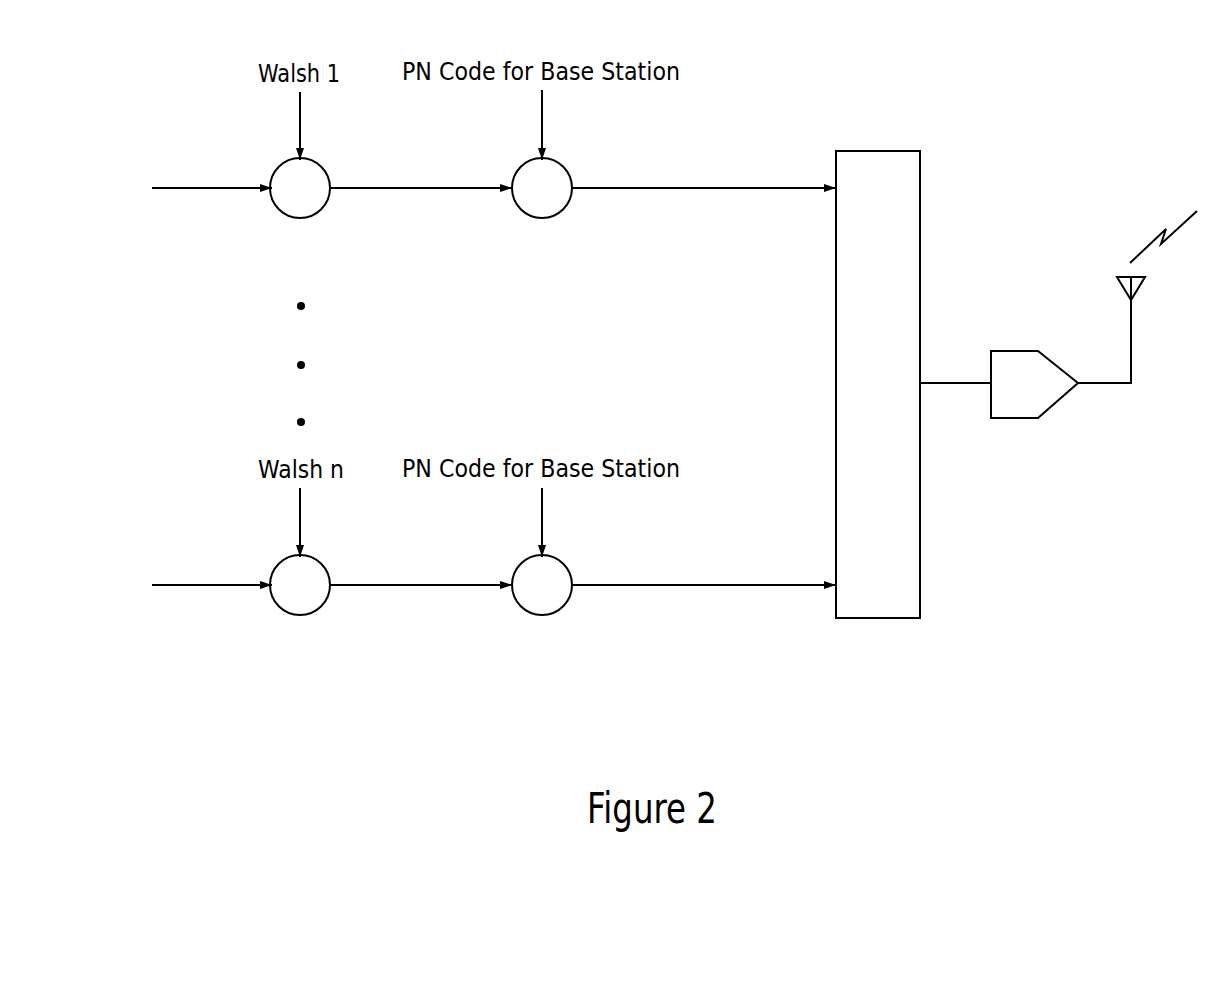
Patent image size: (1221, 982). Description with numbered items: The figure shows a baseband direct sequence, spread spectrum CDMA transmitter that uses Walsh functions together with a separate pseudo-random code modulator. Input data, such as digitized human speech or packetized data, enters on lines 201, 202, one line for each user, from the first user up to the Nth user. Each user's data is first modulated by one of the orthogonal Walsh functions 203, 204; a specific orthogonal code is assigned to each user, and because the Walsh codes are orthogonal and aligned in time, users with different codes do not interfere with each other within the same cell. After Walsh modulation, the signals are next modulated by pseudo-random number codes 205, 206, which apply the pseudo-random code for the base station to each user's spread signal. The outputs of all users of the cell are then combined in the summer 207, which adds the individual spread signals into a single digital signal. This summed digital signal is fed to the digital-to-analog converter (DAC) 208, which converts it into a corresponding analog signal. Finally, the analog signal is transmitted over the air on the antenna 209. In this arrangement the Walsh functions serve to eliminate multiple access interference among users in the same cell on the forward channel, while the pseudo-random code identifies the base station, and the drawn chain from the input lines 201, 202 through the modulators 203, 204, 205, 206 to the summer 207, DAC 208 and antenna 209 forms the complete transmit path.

The input data line 201 is at (195, 190).
The input data line 202 is at (195, 587).
The Walsh function modulator 203 is at (290, 218).
The Walsh function modulator 204 is at (290, 615).
The pseudo-random number code modulator 205 is at (533, 218).
The pseudo-random number code modulator 206 is at (533, 615).
The summer 207 is at (891, 150).
The digital-to-analog converter (DAC) 208 is at (1025, 351).
The antenna 209 is at (1146, 287).